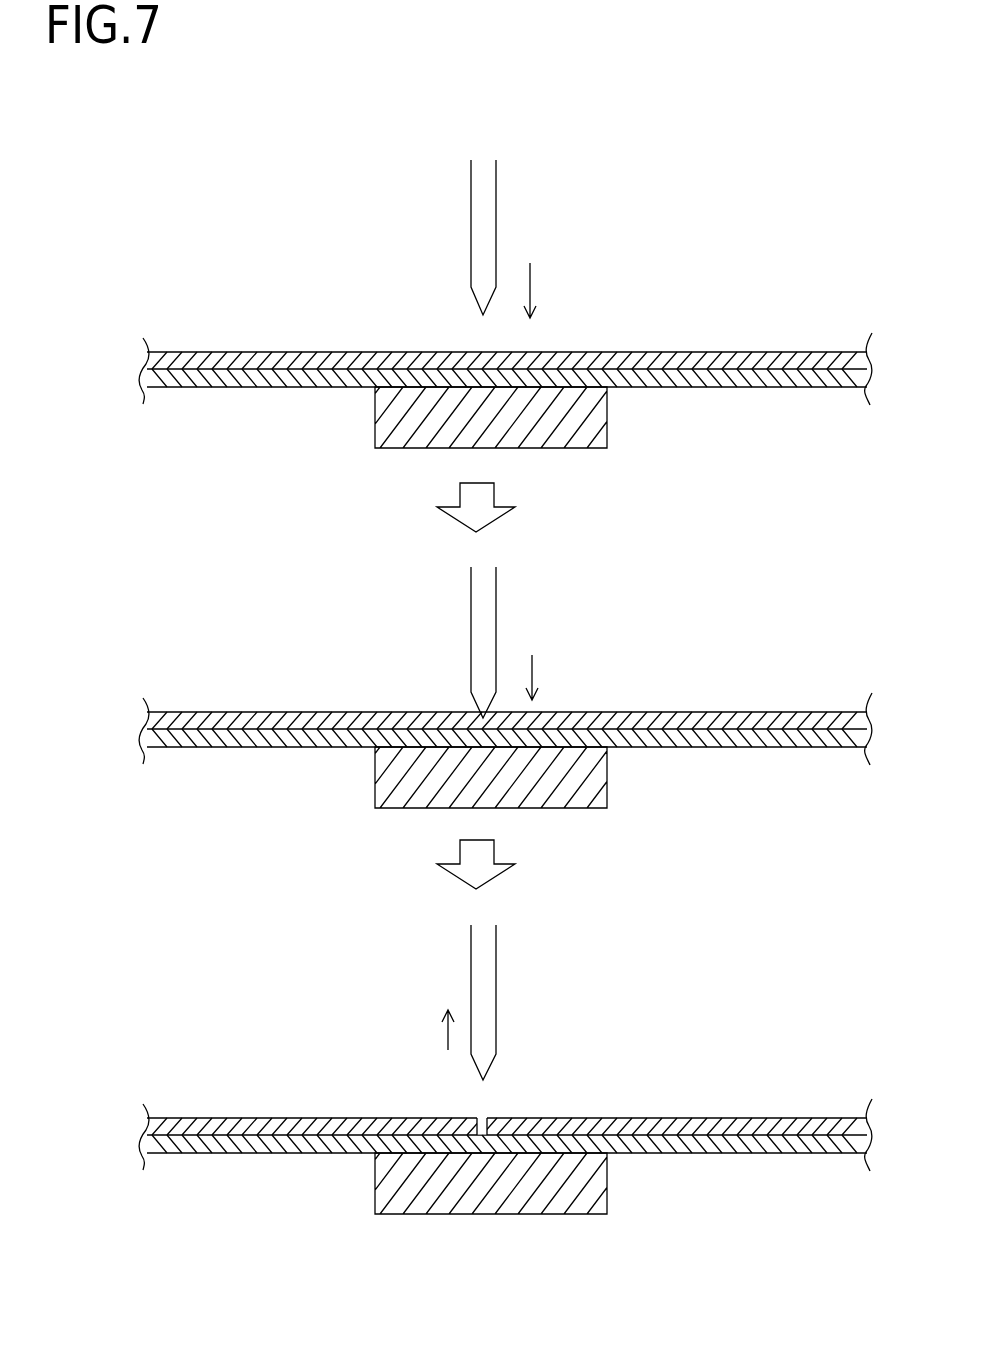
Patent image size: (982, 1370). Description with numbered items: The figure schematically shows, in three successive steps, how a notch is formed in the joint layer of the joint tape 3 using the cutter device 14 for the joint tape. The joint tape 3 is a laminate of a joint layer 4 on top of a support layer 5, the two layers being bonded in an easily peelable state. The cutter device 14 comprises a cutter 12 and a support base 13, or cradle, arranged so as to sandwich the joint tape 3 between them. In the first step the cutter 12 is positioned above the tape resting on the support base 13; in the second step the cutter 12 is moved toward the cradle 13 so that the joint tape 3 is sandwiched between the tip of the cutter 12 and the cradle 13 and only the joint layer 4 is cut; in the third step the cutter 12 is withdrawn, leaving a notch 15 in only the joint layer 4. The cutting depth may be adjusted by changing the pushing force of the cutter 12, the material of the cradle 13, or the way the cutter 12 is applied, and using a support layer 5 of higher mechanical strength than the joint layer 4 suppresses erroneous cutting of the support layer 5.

The joint tape 3 is at (736, 342).
The joint layer 4 is at (204, 362).
The support layer 5 is at (238, 383).
The cutter 12 is at (483, 222).
The support base 13 is at (607, 422).
The cutter device for the joint tape 14 is at (570, 331).
The notch 15 is at (487, 1128).